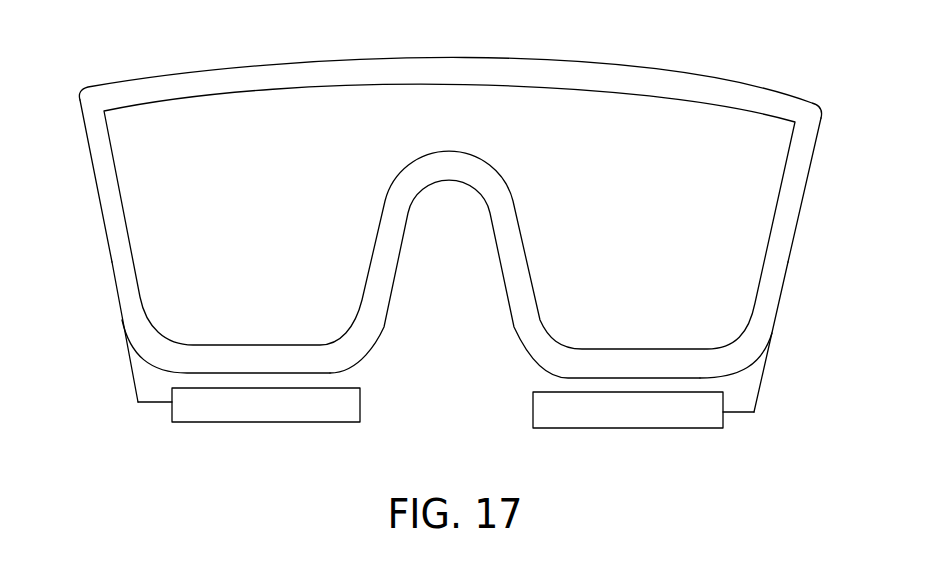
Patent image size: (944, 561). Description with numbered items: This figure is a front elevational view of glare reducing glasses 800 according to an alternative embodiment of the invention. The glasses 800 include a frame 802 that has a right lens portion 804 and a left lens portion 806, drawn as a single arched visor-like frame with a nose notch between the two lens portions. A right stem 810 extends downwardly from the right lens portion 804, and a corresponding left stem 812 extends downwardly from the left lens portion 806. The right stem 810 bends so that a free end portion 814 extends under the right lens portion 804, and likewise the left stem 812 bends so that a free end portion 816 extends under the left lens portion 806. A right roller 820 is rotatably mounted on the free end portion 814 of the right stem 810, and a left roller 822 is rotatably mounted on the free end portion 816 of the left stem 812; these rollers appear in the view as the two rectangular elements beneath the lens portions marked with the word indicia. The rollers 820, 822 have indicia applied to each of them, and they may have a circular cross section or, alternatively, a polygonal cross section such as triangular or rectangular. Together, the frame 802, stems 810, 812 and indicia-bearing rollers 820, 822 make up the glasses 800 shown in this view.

The glasses 800 is at (713, 45).
The frame 802 is at (102, 232).
The right lens portion 804 is at (115, 295).
The left lens portion 806 is at (800, 233).
The right stem 810 is at (137, 385).
The left stem 812 is at (767, 370).
The free end portion 814 is at (166, 403).
The free end portion 816 is at (740, 415).
The right roller 820 is at (312, 423).
The left roller 822 is at (692, 430).